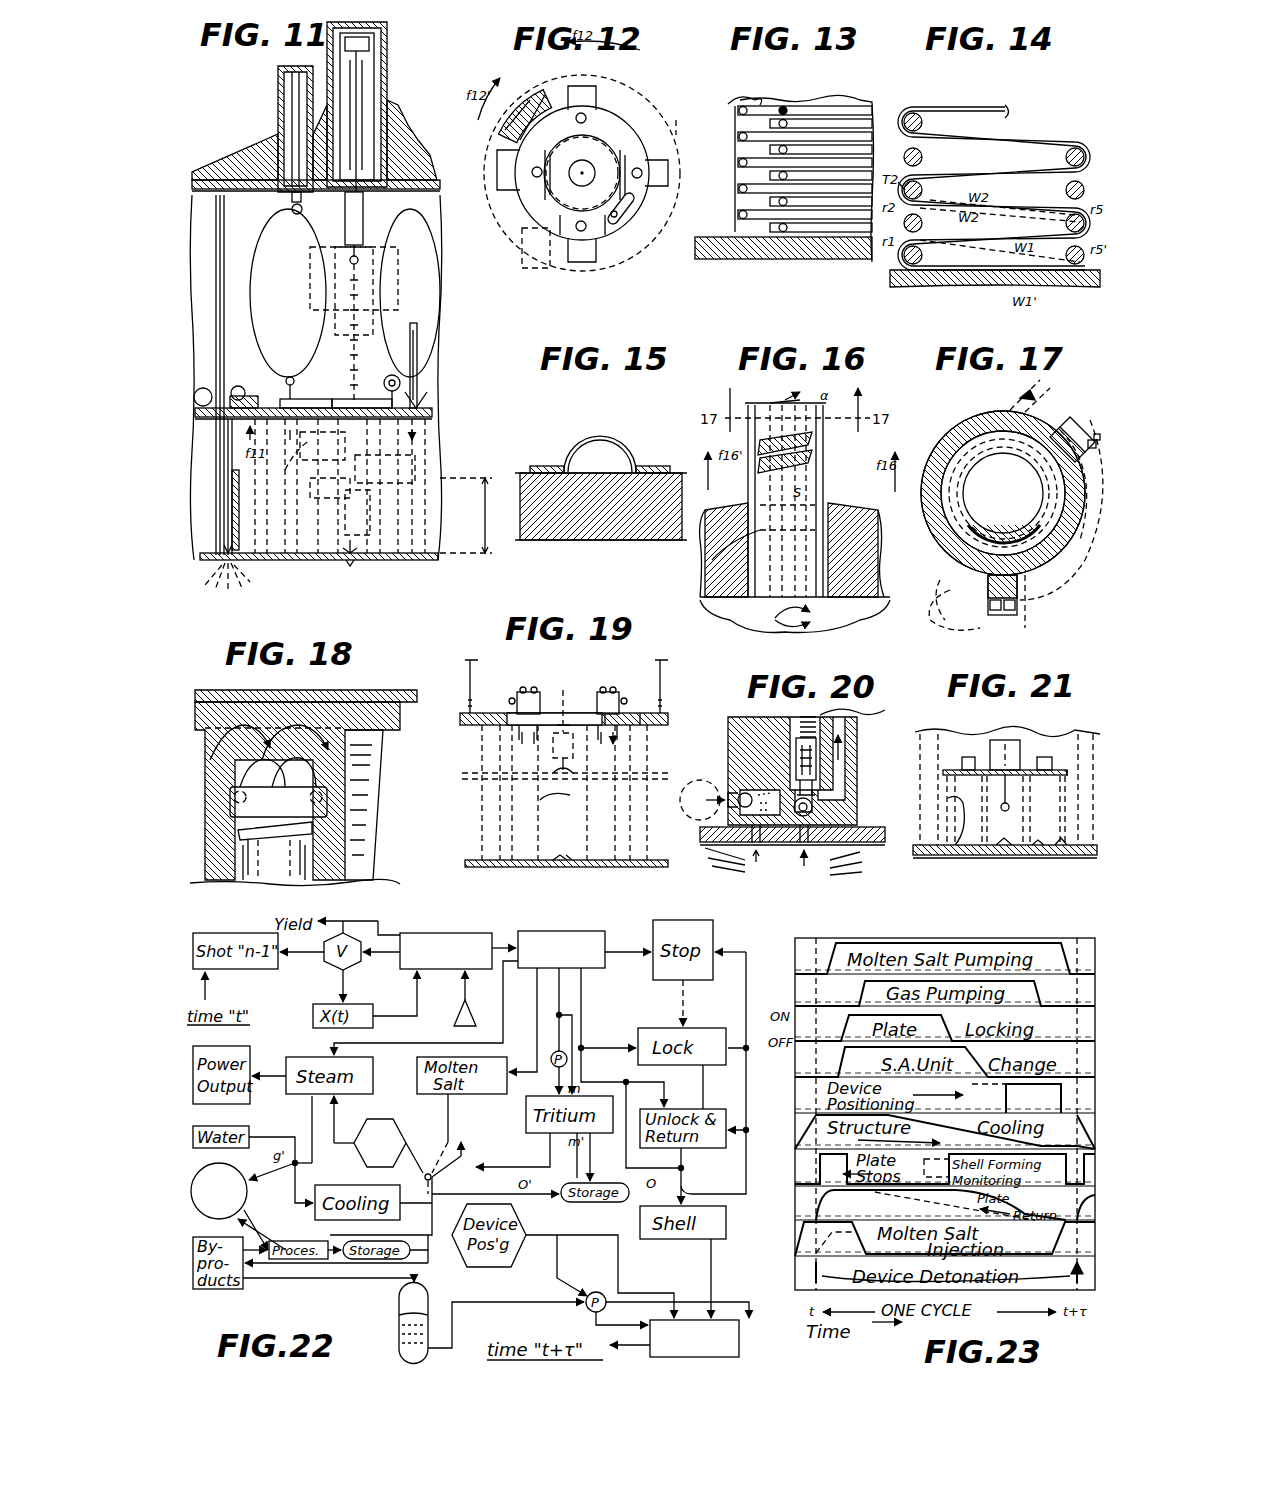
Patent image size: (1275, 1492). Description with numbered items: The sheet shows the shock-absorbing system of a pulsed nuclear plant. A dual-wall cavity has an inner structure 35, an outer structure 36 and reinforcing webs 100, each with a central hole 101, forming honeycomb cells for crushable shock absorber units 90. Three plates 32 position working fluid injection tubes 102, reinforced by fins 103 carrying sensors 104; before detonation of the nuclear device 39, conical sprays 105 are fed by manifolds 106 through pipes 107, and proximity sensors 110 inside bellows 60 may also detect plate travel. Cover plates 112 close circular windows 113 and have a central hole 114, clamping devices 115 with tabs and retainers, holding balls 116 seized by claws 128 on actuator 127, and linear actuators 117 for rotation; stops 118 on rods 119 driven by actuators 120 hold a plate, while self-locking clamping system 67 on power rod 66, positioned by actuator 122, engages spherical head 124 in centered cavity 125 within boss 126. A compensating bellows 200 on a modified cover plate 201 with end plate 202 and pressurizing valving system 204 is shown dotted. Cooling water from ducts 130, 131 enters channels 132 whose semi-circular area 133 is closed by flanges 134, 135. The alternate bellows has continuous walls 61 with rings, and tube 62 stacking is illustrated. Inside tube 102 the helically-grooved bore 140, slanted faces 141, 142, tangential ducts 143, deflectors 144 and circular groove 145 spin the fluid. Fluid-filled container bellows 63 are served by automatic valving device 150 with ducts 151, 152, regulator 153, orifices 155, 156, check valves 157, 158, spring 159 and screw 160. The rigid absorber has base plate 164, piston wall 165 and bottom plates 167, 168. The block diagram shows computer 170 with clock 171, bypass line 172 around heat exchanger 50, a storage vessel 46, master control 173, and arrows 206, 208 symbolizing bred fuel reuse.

In FIG. 11, the plate 32 is at (222, 553).
In FIG. 13, the plate 32 is at (735, 262).
In FIG. 14, the plate 32 is at (925, 285).
In FIG. 16, the plate 32 is at (712, 582).
In FIG. 19, the plate 32 is at (467, 780).
In FIG. 21, the plate 32 is at (925, 858).
In FIG. 11, the inner structure 35 is at (244, 392).
In FIG. 12, the inner structure 35 is at (676, 128).
In FIG. 13, the inner structure 35 is at (738, 130).
In FIG. 18, the inner structure 35 is at (380, 690).
In FIG. 19, the inner structure 35 is at (470, 727).
In FIG. 11, the outer structure 36 is at (420, 178).
In FIG. 22, the nuclear device 39 is at (245, 1201).
In FIG. 22, the collection tank 46 is at (394, 1335).
In FIG. 22, the heat exchanger 50 is at (384, 1120).
In FIG. 11, the bellows 60 is at (440, 481).
In FIG. 13, the bellows 60 is at (745, 95).
In FIG. 14, the bellows 60 is at (915, 110).
In FIG. 19, the bellows 60 is at (498, 828).
In FIG. 21, the bellows 60 is at (920, 754).
In FIG. 13, the flexible walls 61 is at (745, 150).
In FIG. 14, the flexible walls 61 is at (1010, 127).
In FIG. 14, the coil tube 62 is at (1000, 231).
In FIG. 19, the container bellows 63 is at (590, 795).
In FIG. 20, the container bellows 63 is at (725, 860).
In FIG. 21, the container bellows 63 is at (948, 800).
In FIG. 11, the power rod 66 is at (360, 88).
In FIG. 19, the power rod 66 is at (562, 700).
In FIG. 11, the self-locking clamping system 67 is at (365, 225).
In FIG. 19, the self-locking clamping system 67 is at (563, 753).
In FIG. 21, the self-locking clamping system 67 is at (1002, 738).
In FIG. 11, the shock absorber unit 90 is at (310, 265).
In FIG. 11, the reinforcing web 100 is at (215, 200).
In FIG. 19, the reinforcing web 100 is at (470, 676).
In FIG. 11, the central hole 101 is at (428, 218).
In FIG. 11, the working fluid injection tube 102 is at (250, 534).
In FIG. 16, the working fluid injection tube 102 is at (752, 540).
In FIG. 17, the working fluid injection tube 102 is at (970, 418).
In FIG. 18, the working fluid injection tube 102 is at (210, 850).
In FIG. 11, the longitudinal fin 103 is at (222, 463).
In FIG. 16, the longitudinal fin 103 is at (790, 403).
In FIG. 17, the longitudinal fin 103 is at (1035, 590).
In FIG. 18, the longitudinal fin 103 is at (385, 752).
In FIG. 11, the sensor 104 is at (268, 470).
In FIG. 11, the conical spray 105 is at (225, 592).
In FIG. 16, the conical spray 105 is at (835, 615).
In FIG. 11, the working fluid manifold 106 is at (204, 394).
In FIG. 17, the working fluid manifold 106 is at (1003, 615).
In FIG. 11, the pipe 107 is at (221, 448).
In FIG. 11, the proximity sensor 110 is at (300, 450).
In FIG. 12, the proximity sensor 110 is at (500, 149).
In FIG. 11, the cover plate 112 is at (330, 395).
In FIG. 12, the cover plate 112 is at (594, 153).
In FIG. 19, the cover plate 112 is at (640, 712).
In FIG. 20, the cover plate 112 is at (860, 825).
In FIG. 11, the circular window 113 is at (318, 441).
In FIG. 11, the central hole 114 is at (384, 385).
In FIG. 12, the central hole 114 is at (580, 188).
In FIG. 19, the central hole 114 is at (585, 710).
In FIG. 11, the clamping device 115 is at (258, 380).
In FIG. 12, the clamping device 115 is at (552, 88).
In FIG. 11, the holding ball 116 is at (290, 376).
In FIG. 12, the holding ball 116 is at (587, 118).
In FIG. 11, the linear actuator 117 is at (385, 384).
In FIG. 12, the linear actuator 117 is at (545, 268).
In FIG. 11, the stop 118 is at (432, 455).
In FIG. 11, the rod 119 is at (426, 390).
In FIG. 11, the actuator 120 is at (420, 350).
In FIG. 12, the actuator 120 is at (620, 218).
In FIG. 11, the linear actuator 122 is at (376, 95).
In FIG. 11, the spherical head 124 is at (360, 258).
In FIG. 21, the spherical head 124 is at (1004, 813).
In FIG. 11, the centered cavity 125 is at (350, 562).
In FIG. 19, the centered cavity 125 is at (565, 855).
In FIG. 21, the centered cavity 125 is at (1004, 860).
In FIG. 11, the boss 126 is at (344, 545).
In FIG. 11, the linear actuator 127 is at (292, 74).
In FIG. 11, the claw 128 is at (295, 214).
In FIG. 11, the duct 130 is at (262, 148).
In FIG. 11, the duct 131 is at (239, 390).
In FIG. 11, the cooling channel 132 is at (280, 176).
In FIG. 15, the cooling channel 132 is at (583, 445).
In FIG. 15, the semi-circular area 133 is at (605, 455).
In FIG. 15, the flange 134 is at (650, 465).
In FIG. 15, the flange 135 is at (565, 465).
In FIG. 16, the helically-grooved bore 140 is at (815, 452).
In FIG. 17, the helically-grooved bore 140 is at (970, 530).
In FIG. 18, the helically-grooved bore 140 is at (250, 838).
In FIG. 11, the cooperating face 141 is at (220, 284).
In FIG. 16, the cooperating face 141 is at (712, 560).
In FIG. 17, the cooperating face 141 is at (988, 618).
In FIG. 16, the cooperating face 142 is at (830, 530).
In FIG. 17, the cooperating face 142 is at (1020, 630).
In FIG. 17, the tangentially-oriented duct 143 is at (1005, 392).
In FIG. 18, the tangentially-oriented duct 143 is at (290, 775).
In FIG. 17, the deflector 144 is at (1050, 575).
In FIG. 18, the deflector 144 is at (230, 700).
In FIG. 18, the circular groove 145 is at (282, 803).
In FIG. 19, the automatic valving device 150 is at (522, 692).
In FIG. 20, the automatic valving device 150 is at (726, 726).
In FIG. 21, the automatic valving device 150 is at (968, 755).
In FIG. 19, the duct 151 is at (510, 700).
In FIG. 20, the duct 151 is at (705, 790).
In FIG. 19, the duct 152 is at (532, 690).
In FIG. 20, the duct 152 is at (850, 720).
In FIG. 19, the pressure regulator 153 is at (605, 690).
In FIG. 20, the orifice 155 is at (770, 862).
In FIG. 20, the orifice 156 is at (804, 866).
In FIG. 20, the check valve 157 is at (760, 790).
In FIG. 20, the check valve 158 is at (812, 800).
In FIG. 20, the spring 159 is at (798, 748).
In FIG. 20, the adjustment screw 160 is at (805, 712).
In FIG. 21, the base plate 164 is at (952, 738).
In FIG. 21, the cylindrical wall 165 is at (1078, 740).
In FIG. 20, the bottom plate 167 is at (878, 828).
In FIG. 21, the bottom plate 168 is at (1038, 860).
In FIG. 22, the computer 170 is at (445, 933).
In FIG. 22, the time clock 171 is at (458, 1016).
In FIG. 22, the bypass line 172 is at (444, 1160).
In FIG. 22, the master control unit 173 is at (546, 931).
In FIG. 11, the compensating bellows 200 is at (290, 486).
In FIG. 11, the modified cover plate 201 is at (346, 378).
In FIG. 11, the end plate 202 is at (330, 492).
In FIG. 11, the pressurizing valving system 204 is at (415, 466).
In FIG. 22, the arrow 206 is at (622, 1317).
In FIG. 22, the arrow 208 is at (688, 1154).